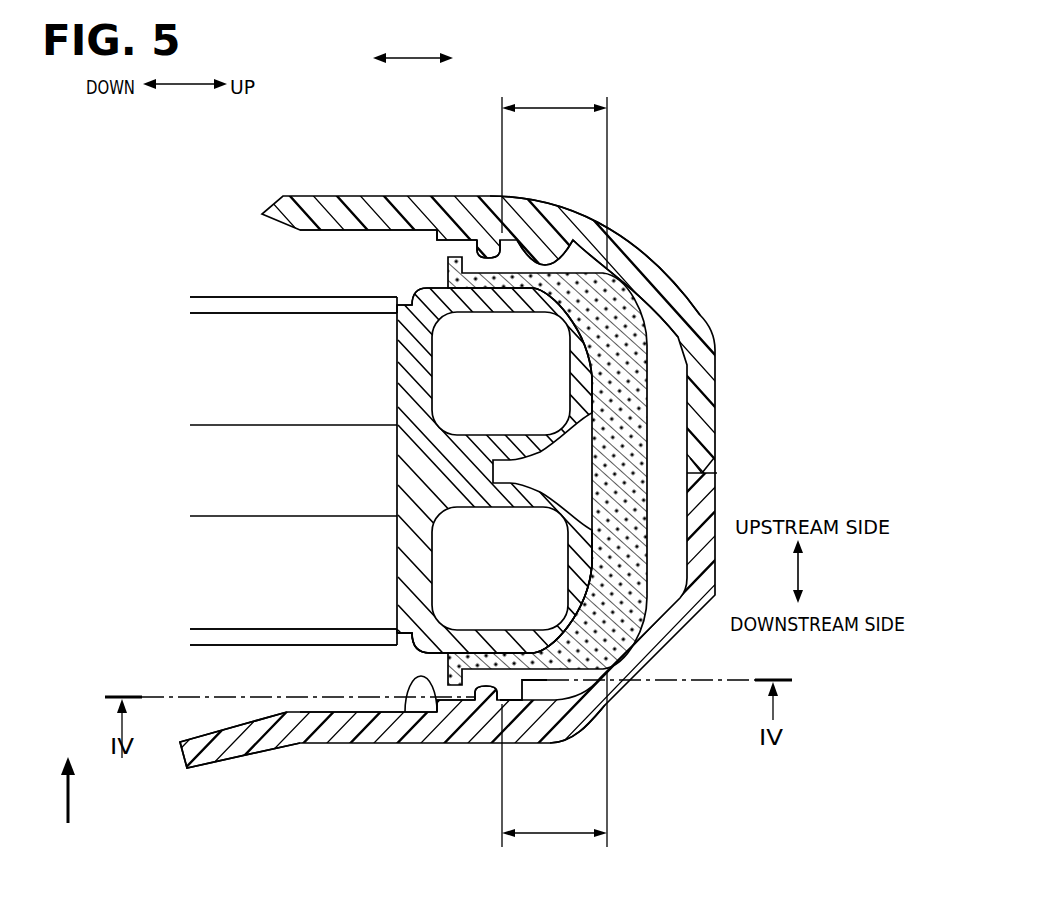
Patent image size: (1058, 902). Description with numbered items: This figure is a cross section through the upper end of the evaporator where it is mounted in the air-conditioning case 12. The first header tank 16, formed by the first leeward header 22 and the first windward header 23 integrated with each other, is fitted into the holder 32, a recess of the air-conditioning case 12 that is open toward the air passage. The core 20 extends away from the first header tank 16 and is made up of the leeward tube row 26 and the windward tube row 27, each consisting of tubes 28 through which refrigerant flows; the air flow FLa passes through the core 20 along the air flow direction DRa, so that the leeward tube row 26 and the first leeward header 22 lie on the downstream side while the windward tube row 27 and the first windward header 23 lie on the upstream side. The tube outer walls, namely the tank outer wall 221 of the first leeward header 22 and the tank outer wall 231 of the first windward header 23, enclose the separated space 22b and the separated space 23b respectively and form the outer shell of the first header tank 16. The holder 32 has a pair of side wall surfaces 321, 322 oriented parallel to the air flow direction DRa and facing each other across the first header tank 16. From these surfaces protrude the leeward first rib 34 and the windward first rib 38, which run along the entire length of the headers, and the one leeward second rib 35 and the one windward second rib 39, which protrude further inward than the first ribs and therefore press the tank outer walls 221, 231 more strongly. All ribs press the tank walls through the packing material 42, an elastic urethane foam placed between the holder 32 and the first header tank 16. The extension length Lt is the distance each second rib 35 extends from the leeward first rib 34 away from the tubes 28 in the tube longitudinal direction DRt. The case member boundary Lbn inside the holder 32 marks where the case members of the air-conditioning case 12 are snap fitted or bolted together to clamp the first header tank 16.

The air-conditioning case 12 is at (196, 779).
The first header tank 16 is at (796, 326).
The core 20 is at (303, 262).
The first leeward header 22 is at (604, 380).
The separated space 22b is at (462, 345).
The tank outer wall 221 is at (483, 300).
The first windward header 23 is at (605, 562).
The separated space 23b is at (460, 596).
The tank outer wall 231 is at (472, 692).
The leeward tube row 26 is at (257, 300).
The windward tube row 27 is at (284, 639).
The tube 28 is at (217, 337).
The holder 32 is at (638, 245).
The side wall surface 321 is at (549, 267).
The side wall surface 322 is at (428, 676).
The leeward first rib 34 is at (489, 248).
The one leeward second rib 35 is at (620, 322).
The windward first rib 38 is at (475, 648).
The one windward second rib 39 is at (588, 650).
The packing material 42 is at (622, 355).
The case member boundary Lbn is at (718, 486).
The extension length Lt is at (563, 107).
The air flow direction DRa is at (803, 572).
The tube longitudinal direction DRt is at (418, 58).
The air flow FLa is at (72, 793).